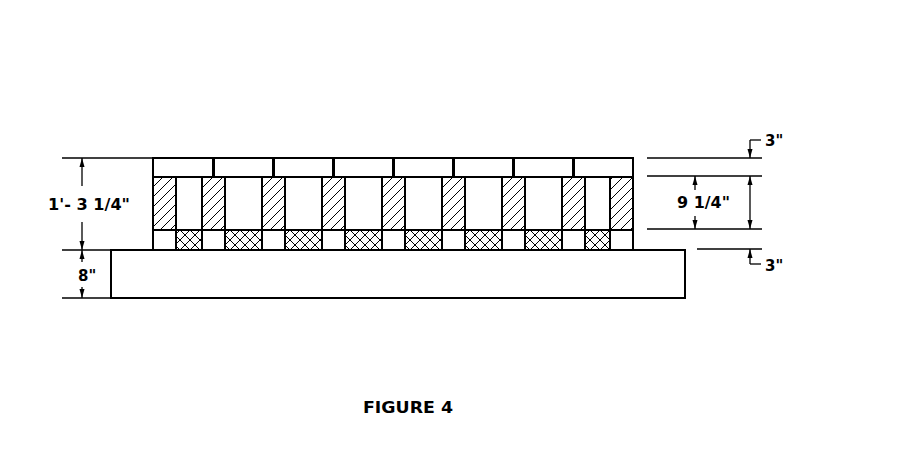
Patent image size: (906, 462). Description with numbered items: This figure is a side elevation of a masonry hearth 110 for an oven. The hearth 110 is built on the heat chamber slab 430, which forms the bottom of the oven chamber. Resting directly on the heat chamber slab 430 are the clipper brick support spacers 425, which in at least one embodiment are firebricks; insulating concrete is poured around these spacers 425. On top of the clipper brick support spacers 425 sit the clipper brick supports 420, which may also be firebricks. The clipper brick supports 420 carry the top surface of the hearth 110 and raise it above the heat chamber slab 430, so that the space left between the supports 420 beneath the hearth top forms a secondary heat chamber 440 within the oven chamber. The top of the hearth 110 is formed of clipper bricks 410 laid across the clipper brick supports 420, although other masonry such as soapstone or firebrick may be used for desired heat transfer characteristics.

The hearth 110 is at (106, 64).
The top plate 410 is at (182, 172).
The clipper brick supports 420 is at (166, 183).
The clipper brick support spacers 425 is at (165, 247).
The heat chamber slab 430 is at (155, 283).
The secondary heat chamber 440 is at (192, 192).